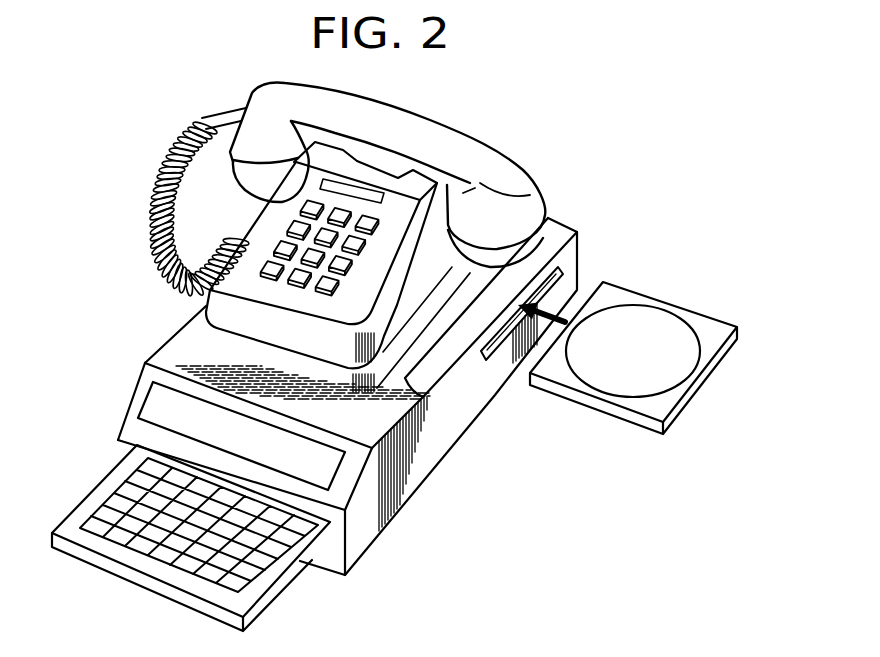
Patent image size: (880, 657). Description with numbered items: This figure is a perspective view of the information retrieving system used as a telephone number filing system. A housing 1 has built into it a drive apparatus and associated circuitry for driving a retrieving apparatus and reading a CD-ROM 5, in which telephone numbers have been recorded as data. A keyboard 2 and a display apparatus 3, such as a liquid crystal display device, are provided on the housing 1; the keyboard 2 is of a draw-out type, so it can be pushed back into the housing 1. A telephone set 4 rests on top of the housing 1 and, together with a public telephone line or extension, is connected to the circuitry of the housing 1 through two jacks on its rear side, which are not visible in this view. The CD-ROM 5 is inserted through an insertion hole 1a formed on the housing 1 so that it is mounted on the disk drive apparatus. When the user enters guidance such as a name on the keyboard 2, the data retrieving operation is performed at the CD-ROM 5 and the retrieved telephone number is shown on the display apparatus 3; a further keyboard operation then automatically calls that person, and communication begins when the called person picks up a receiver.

The housing 1 is at (580, 247).
The insertion hole 1a is at (487, 357).
The keyboard 2 is at (230, 553).
The display apparatus 3 is at (148, 417).
The telephone set 4 is at (475, 140).
The CD-ROM 5 is at (713, 343).